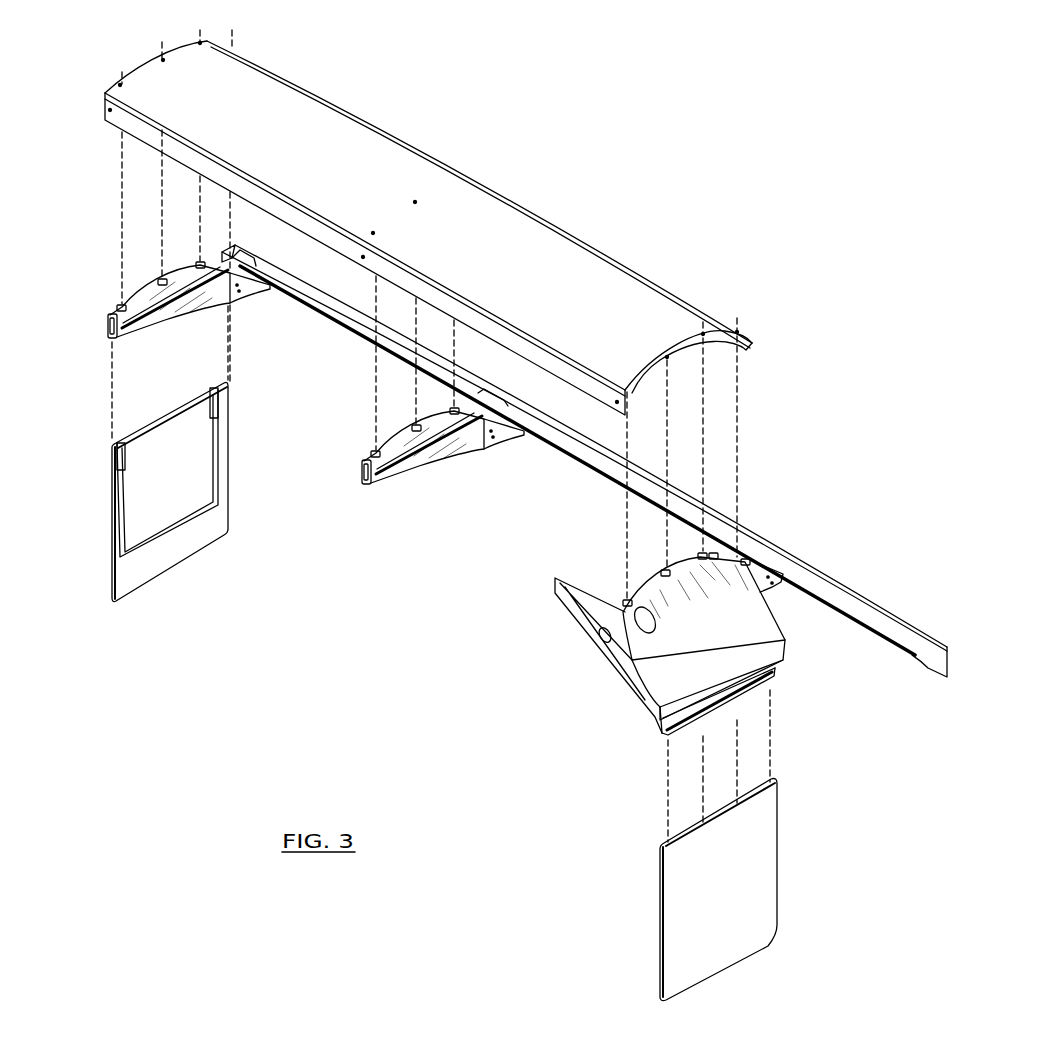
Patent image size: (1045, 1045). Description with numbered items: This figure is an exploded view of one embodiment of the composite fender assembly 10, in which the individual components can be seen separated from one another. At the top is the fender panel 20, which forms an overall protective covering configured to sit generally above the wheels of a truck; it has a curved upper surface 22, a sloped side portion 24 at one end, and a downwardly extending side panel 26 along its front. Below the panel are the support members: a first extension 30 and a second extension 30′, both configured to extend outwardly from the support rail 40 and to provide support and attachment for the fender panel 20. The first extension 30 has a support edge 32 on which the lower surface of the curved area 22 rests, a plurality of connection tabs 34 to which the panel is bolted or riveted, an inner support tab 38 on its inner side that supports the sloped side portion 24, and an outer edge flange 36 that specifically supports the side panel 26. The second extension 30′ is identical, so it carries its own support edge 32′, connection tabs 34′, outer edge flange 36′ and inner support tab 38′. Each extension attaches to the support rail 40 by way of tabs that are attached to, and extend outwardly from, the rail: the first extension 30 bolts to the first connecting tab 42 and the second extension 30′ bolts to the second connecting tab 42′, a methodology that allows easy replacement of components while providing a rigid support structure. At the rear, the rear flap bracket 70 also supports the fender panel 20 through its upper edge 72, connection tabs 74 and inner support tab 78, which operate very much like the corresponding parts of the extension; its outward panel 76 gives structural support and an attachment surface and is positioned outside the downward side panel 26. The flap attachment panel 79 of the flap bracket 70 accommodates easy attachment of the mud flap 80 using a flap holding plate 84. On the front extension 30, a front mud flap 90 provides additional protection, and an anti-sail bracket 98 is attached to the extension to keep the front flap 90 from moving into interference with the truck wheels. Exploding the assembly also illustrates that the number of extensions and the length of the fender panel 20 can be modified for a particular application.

The composite fender assembly 10 is at (845, 224).
The fender panel 20 is at (530, 201).
The curved upper surface 22 is at (545, 288).
The sloped side portion 24 is at (737, 342).
The downwardly extending side panel 26 is at (598, 394).
The first extension 30 is at (182, 326).
The second extension 30′ is at (453, 476).
The support edge 32 is at (119, 306).
The bracket body 32′ is at (373, 458).
The connection tabs 34 is at (200, 265).
The mounting tab 34′ is at (454, 410).
The outer edge flange 36 is at (109, 328).
The end cap 36′ is at (363, 476).
The inner support tab 38 is at (243, 266).
The rail mount 38′ is at (496, 417).
The support rail 40 is at (912, 640).
The first connecting tab 42 is at (251, 291).
The second connecting tab 42′ is at (502, 424).
The rear flap bracket 70 is at (613, 706).
The upper edge 72 is at (728, 553).
The connection tabs 74 is at (703, 556).
The outward panel 76 is at (598, 658).
The inner support tab 78 is at (756, 578).
The flap attachment panel 79 is at (780, 657).
The mud flap 80 is at (760, 884).
The flap holding plate 84 is at (689, 736).
The front mud flap 90 is at (162, 562).
The anti-sail bracket 98 is at (118, 513).